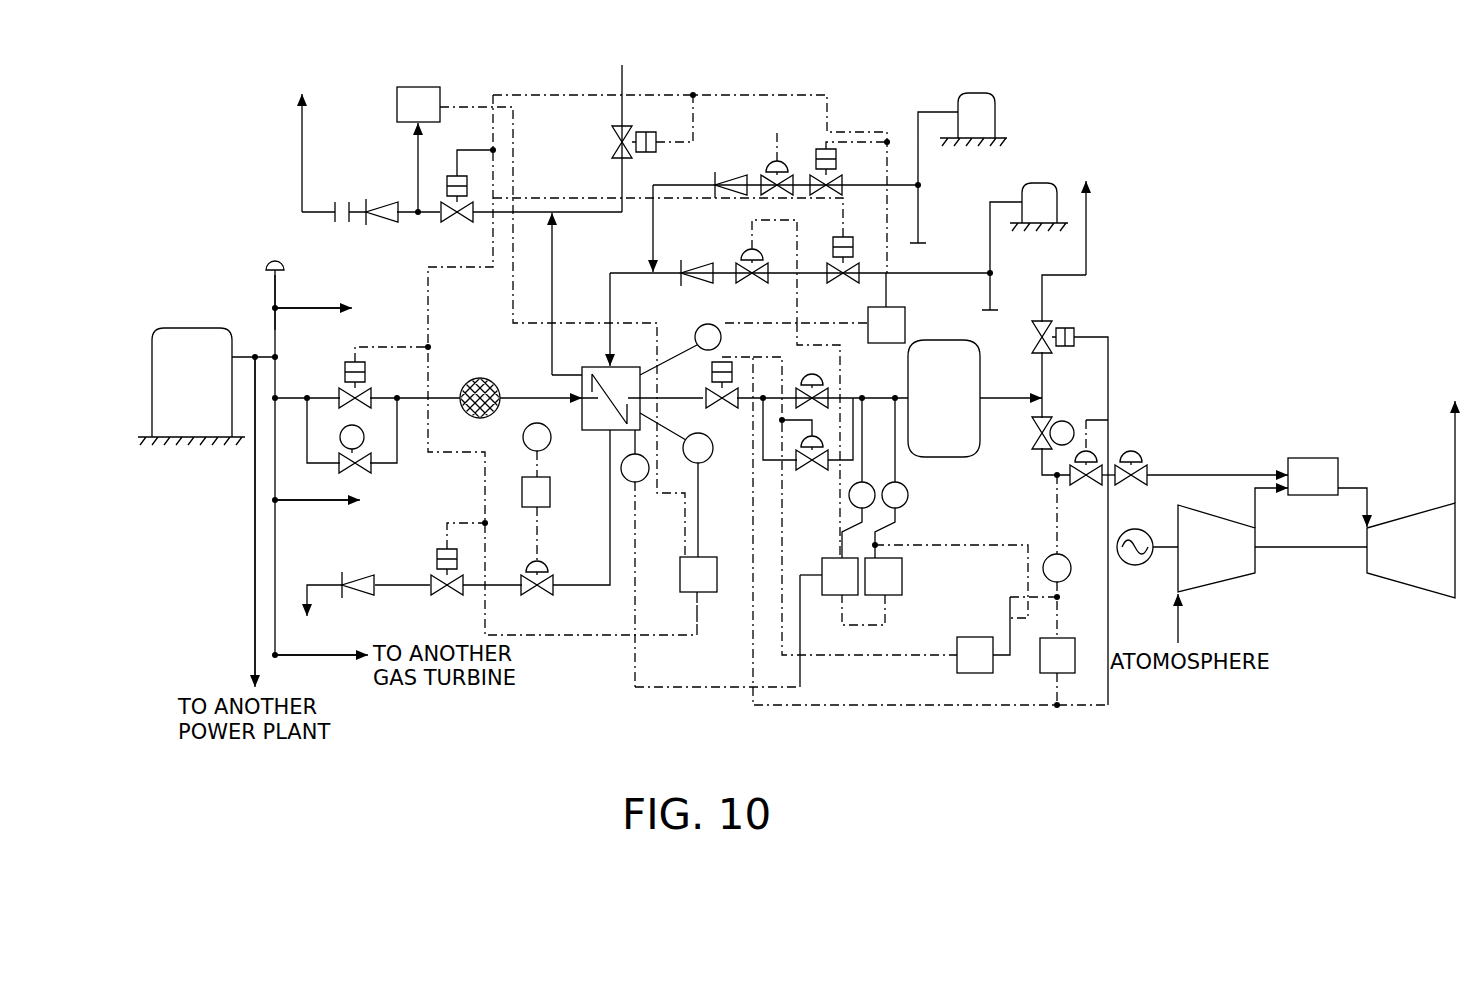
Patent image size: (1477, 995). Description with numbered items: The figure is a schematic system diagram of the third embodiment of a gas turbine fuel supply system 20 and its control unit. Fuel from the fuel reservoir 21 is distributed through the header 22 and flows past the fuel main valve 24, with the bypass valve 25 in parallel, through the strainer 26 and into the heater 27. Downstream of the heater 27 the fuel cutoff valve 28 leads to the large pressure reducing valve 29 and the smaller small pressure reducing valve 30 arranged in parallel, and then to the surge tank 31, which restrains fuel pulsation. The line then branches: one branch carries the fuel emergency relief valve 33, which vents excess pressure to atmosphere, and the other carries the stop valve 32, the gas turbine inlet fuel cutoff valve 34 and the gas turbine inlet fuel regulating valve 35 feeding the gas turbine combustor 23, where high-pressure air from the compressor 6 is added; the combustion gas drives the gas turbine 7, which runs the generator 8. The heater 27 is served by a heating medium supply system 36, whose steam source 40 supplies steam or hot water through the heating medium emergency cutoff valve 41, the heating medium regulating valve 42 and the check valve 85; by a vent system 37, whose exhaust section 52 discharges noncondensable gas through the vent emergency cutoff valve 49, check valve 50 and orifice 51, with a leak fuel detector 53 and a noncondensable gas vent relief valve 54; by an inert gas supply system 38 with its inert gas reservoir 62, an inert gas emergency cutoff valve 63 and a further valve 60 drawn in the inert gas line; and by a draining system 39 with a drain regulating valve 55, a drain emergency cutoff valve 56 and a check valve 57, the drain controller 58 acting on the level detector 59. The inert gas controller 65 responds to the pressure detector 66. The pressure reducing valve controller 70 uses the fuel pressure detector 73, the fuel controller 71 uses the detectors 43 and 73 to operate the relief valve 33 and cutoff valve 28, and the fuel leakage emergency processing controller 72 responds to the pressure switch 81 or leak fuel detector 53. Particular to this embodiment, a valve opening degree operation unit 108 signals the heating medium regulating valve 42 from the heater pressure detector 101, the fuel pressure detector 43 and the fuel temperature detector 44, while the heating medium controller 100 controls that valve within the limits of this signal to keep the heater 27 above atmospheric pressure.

The compressor 6 is at (1228, 580).
The gas turbine 7 is at (1405, 515).
The generator 8 is at (1138, 565).
The fuel supply system 20 is at (505, 370).
The fuel reservoir 21 is at (220, 328).
The header 22 is at (283, 292).
The gas turbine combustor 23 is at (1308, 458).
The fuel main valve 24 is at (343, 368).
The bypass valve 25 is at (360, 473).
The strainer 26 is at (463, 388).
The heater 27 is at (637, 364).
The fuel cutoff valve 28 is at (726, 404).
The large pressure reducing valve 29 is at (800, 395).
The small pressure reducing valve 30 is at (810, 470).
The surge tank 31 is at (948, 457).
The stop valve 32 is at (1046, 422).
The fuel emergency relief valve 33 is at (1058, 326).
The gas turbine inlet fuel cutoff valve 34 is at (1094, 487).
The gas turbine inlet fuel regulating valve 35 is at (1133, 485).
The heating medium supply system 36 is at (672, 263).
The vent system 37 is at (560, 286).
The inert gas supply system 38 is at (687, 172).
The draining system 39 is at (608, 542).
The steam source 40 is at (1040, 183).
The heating medium emergency cutoff valve 41 is at (850, 283).
The heating medium regulating valve 42 is at (757, 282).
The fuel pressure detector 43 is at (855, 508).
The fuel temperature detector 44 is at (905, 505).
The vent emergency cutoff valve 49 is at (465, 224).
The check valve 50 is at (380, 225).
The orifice 51 is at (334, 225).
The exhaust section 52 is at (434, 216).
The leak fuel detector 53 is at (397, 108).
The noncondensable gas vent relief valve 54 is at (610, 150).
The drain regulating valve 55 is at (540, 596).
The drain emergency cutoff valve 56 is at (452, 596).
The check valve 57 is at (362, 596).
The drain controller 58 is at (550, 498).
The level detector 59 is at (549, 446).
The control valve 60 is at (781, 160).
The inert gas reservoir 62 is at (992, 93).
The inert gas emergency cutoff valve 63 is at (836, 163).
The inert gas controller 65 is at (730, 184).
The pressure detector 66 is at (696, 330).
The pressure reducing valve controller 70 is at (957, 675).
The fuel controller 71 is at (1040, 668).
The fuel leakage emergency processing controller 72 is at (704, 592).
The fuel pressure detector 73 is at (1068, 578).
The pressure switch 81 is at (708, 461).
The check valve 85 is at (702, 282).
The heating medium controller 100 is at (828, 595).
The pressure detector 101 is at (642, 482).
The valve opening degree operation unit 108 is at (902, 578).